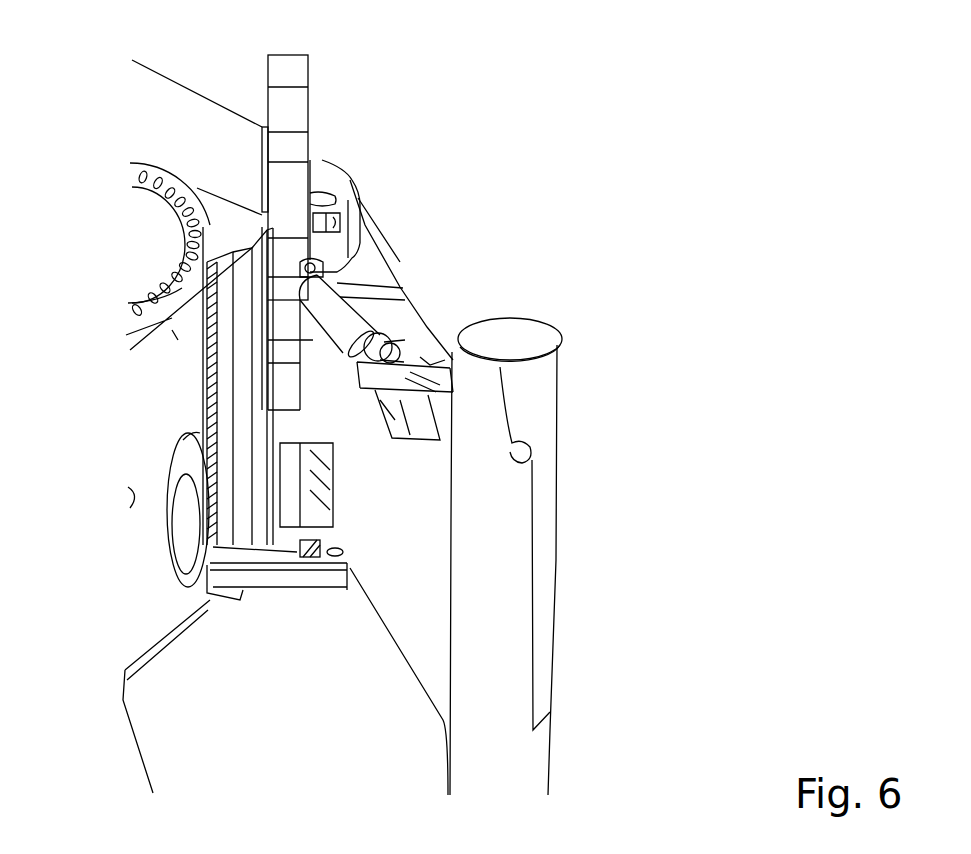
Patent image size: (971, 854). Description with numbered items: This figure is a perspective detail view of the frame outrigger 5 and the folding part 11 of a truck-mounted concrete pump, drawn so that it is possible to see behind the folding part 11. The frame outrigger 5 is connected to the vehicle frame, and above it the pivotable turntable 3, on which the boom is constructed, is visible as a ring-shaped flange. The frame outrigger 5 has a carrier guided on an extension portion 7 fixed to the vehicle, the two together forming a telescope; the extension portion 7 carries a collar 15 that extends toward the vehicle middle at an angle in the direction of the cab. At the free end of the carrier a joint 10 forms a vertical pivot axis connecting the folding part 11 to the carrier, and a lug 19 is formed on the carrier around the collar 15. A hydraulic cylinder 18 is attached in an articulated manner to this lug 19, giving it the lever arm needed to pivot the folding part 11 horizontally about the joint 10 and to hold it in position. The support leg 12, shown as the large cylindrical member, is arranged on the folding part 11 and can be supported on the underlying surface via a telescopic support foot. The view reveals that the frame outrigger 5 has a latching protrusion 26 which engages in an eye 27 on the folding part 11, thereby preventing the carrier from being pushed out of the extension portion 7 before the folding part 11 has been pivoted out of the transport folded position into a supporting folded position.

The turntable 3 is at (148, 245).
The frame outrigger 5 is at (154, 122).
The extension portion 7 is at (222, 182).
The joint 10 is at (320, 197).
The folding part 11 is at (410, 331).
The support leg 12 is at (500, 625).
The collar 15 is at (300, 102).
The hydraulic cylinder 18 is at (333, 305).
The lug 19 is at (347, 242).
The latching protrusion 26 is at (287, 388).
The eye 27 is at (320, 365).